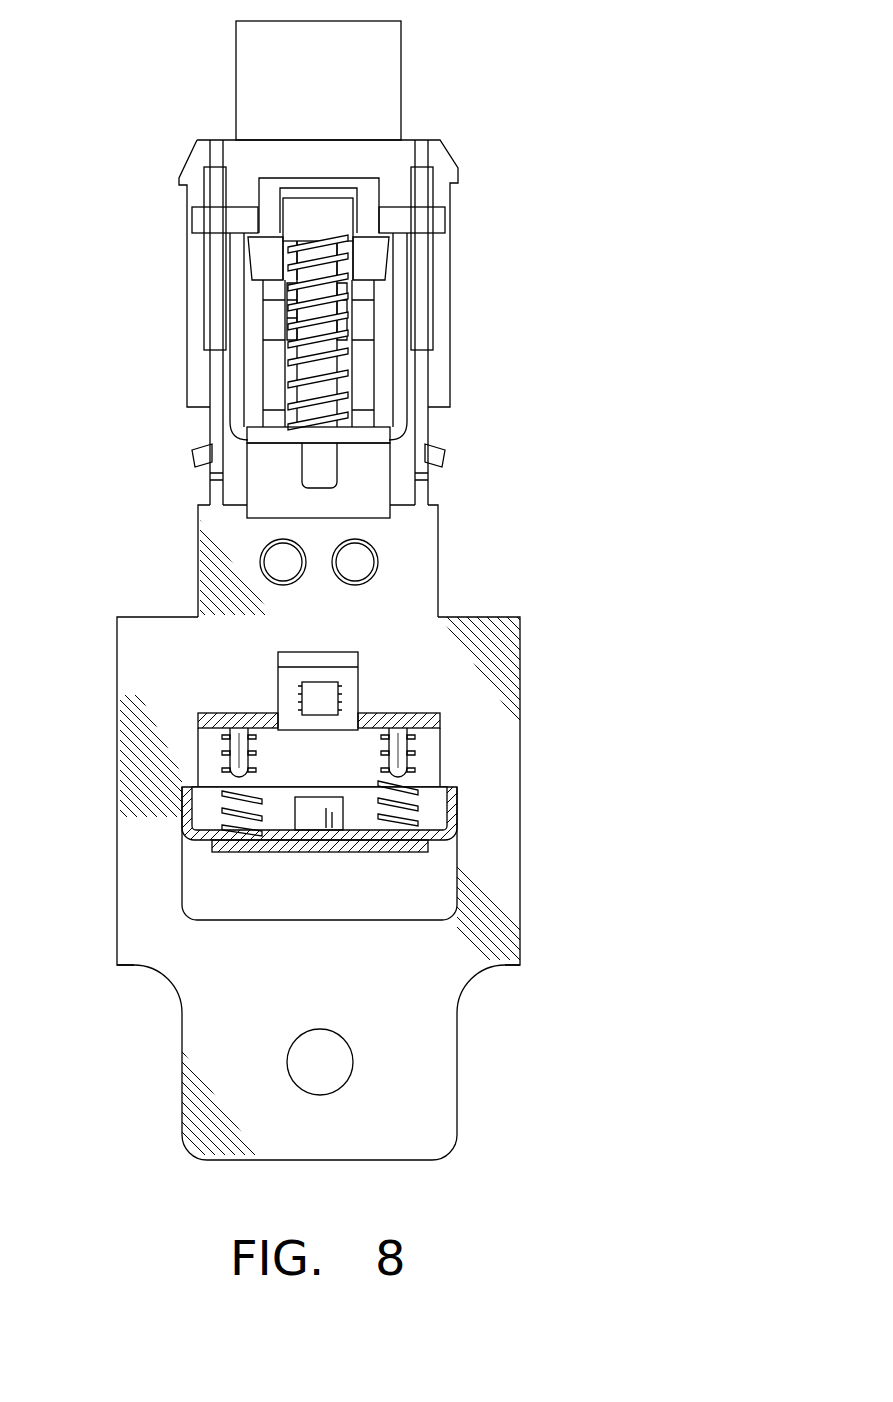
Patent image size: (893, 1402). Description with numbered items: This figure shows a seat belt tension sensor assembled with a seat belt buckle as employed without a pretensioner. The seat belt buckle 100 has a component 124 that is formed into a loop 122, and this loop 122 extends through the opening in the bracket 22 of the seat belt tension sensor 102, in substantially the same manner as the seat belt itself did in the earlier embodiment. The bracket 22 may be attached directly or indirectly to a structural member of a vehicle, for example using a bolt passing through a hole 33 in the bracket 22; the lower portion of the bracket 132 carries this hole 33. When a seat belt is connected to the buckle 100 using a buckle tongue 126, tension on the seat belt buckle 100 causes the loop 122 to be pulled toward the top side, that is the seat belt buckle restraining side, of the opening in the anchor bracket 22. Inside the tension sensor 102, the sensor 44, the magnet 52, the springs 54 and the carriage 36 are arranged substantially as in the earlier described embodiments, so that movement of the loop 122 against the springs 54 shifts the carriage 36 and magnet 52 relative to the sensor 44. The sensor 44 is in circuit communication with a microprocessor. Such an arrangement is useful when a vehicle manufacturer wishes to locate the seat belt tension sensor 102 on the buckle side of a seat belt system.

The buckle tongue 126 is at (375, 87).
The seat belt buckle 100 is at (462, 311).
The component 124 is at (415, 560).
The seat belt tension sensor 102 is at (533, 806).
The bracket 22 is at (288, 957).
The lower mounting flange 132 is at (414, 1095).
The hole 33 is at (330, 1090).
The sensor 44 is at (315, 695).
The loop 122 is at (275, 848).
The carriage 36 is at (432, 843).
The springs 54 is at (232, 800).
The magnet 52 is at (312, 810).